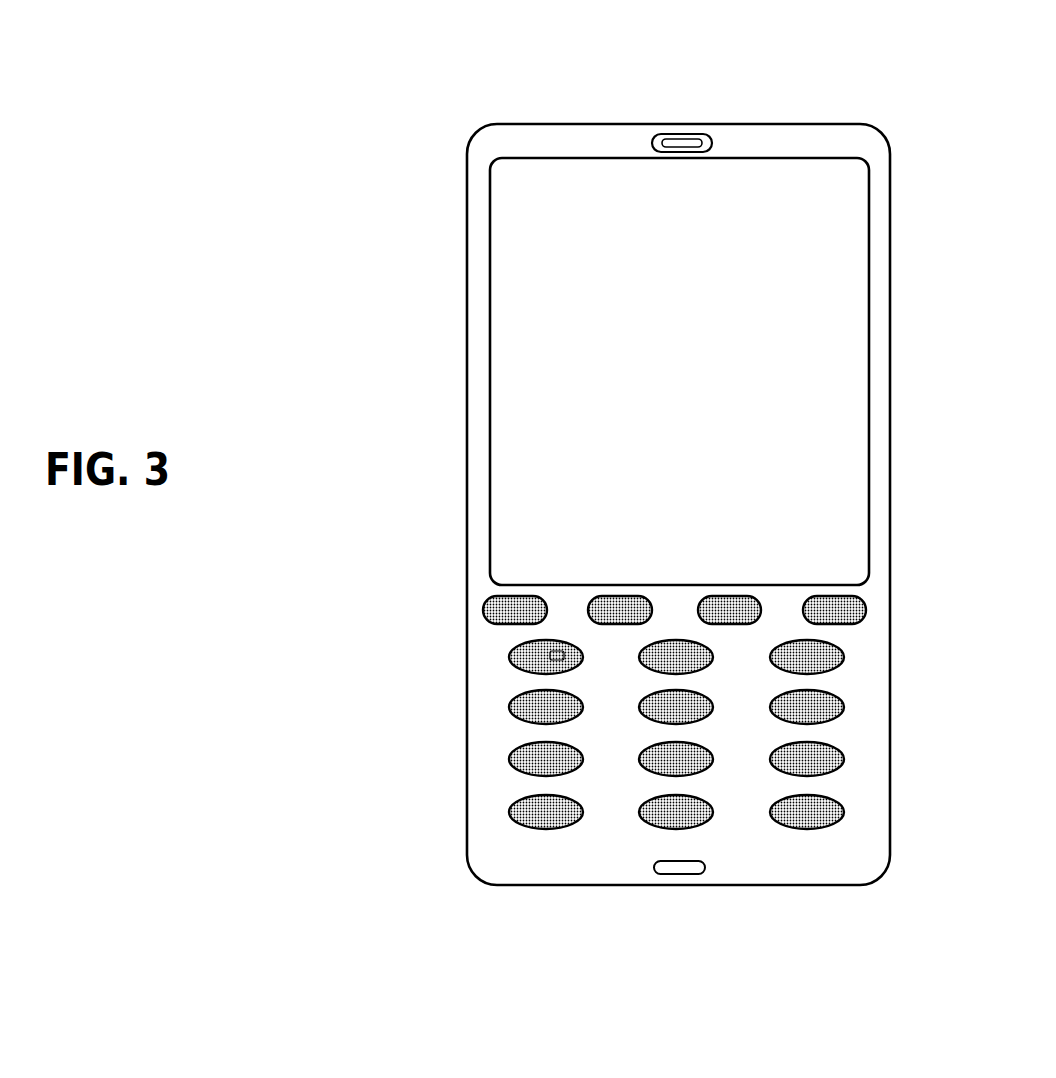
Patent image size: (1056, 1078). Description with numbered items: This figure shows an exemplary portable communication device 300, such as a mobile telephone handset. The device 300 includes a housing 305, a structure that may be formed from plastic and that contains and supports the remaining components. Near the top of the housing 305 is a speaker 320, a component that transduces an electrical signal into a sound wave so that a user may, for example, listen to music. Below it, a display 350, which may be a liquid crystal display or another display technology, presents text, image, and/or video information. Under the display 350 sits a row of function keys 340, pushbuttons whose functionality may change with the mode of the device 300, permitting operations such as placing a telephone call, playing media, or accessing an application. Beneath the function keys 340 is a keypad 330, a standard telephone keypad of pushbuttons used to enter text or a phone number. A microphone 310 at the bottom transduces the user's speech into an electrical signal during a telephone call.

The portable communication device 300 is at (490, 97).
The housing 305 is at (467, 445).
The microphone 310 is at (694, 874).
The speaker 320 is at (692, 134).
The keypad 330 is at (898, 648).
The function keys 340 is at (898, 593).
The display 350 is at (852, 390).